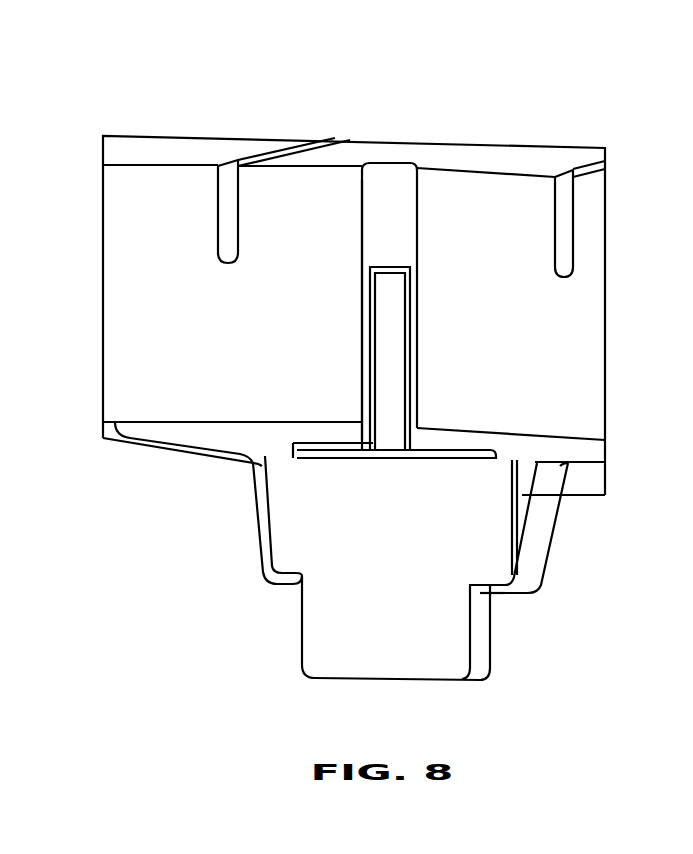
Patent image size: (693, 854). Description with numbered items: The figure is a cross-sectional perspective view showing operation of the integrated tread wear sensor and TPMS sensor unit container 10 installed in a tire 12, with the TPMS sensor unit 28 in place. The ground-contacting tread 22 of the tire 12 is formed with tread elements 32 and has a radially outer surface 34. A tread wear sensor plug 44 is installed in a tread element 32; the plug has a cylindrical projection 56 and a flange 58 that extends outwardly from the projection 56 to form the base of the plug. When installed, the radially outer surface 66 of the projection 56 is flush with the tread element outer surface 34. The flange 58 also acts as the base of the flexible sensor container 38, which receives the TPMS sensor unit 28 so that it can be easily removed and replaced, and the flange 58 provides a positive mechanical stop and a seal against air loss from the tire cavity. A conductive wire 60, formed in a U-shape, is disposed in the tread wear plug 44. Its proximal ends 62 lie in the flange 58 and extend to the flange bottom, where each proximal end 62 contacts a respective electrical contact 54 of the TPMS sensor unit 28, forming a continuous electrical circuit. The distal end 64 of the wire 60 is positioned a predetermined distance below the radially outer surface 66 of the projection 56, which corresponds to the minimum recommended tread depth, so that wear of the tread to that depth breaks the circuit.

The integrated tread wear sensor and TPMS sensor unit container 10 is at (342, 96).
The tire 12 is at (562, 133).
The tread 22 is at (197, 135).
The TPMS sensor unit 28 is at (298, 671).
The tread element 32 is at (513, 178).
The radially outer surface of the tread 34 is at (267, 150).
The sensor container 38 is at (544, 470).
The tread wear sensor plug 44 is at (424, 303).
The electrical contacts 54 is at (255, 460).
The cylindrical projection 56 is at (388, 222).
The flange 58 is at (522, 496).
The conductive wire 60 is at (408, 375).
The proximal ends 62 is at (253, 463).
The distal end 64 is at (392, 270).
The radially outer surface of the projection 66 is at (395, 160).